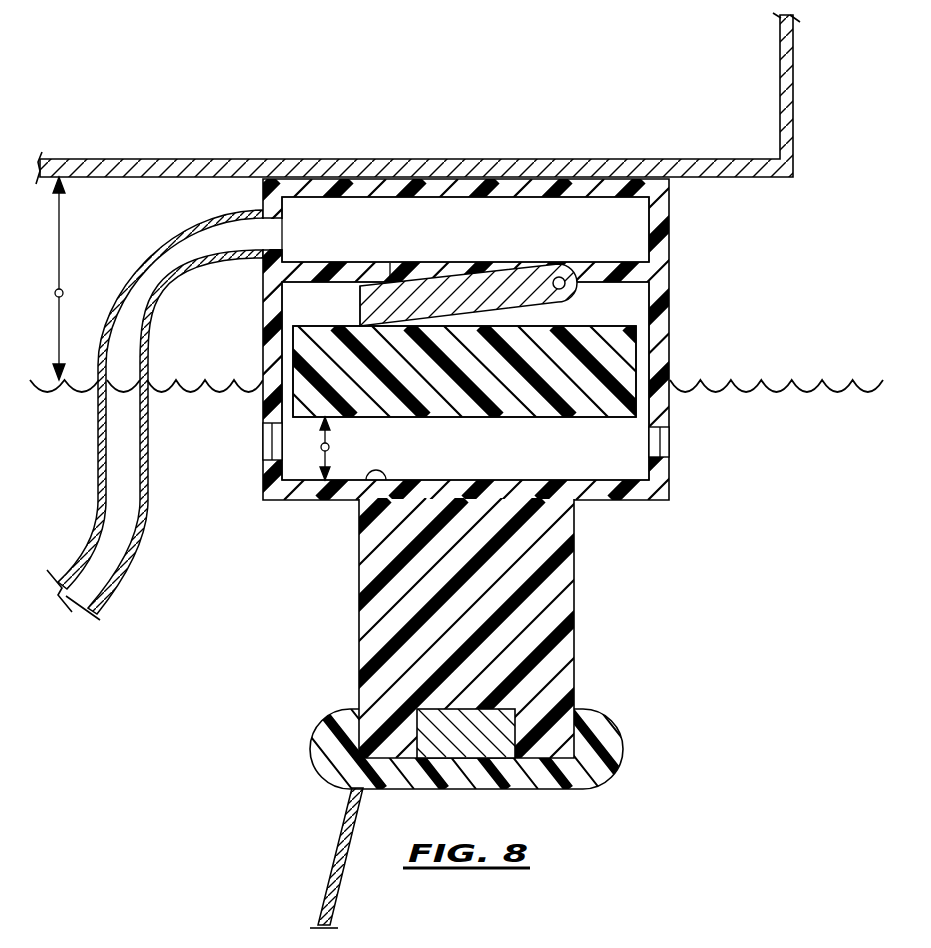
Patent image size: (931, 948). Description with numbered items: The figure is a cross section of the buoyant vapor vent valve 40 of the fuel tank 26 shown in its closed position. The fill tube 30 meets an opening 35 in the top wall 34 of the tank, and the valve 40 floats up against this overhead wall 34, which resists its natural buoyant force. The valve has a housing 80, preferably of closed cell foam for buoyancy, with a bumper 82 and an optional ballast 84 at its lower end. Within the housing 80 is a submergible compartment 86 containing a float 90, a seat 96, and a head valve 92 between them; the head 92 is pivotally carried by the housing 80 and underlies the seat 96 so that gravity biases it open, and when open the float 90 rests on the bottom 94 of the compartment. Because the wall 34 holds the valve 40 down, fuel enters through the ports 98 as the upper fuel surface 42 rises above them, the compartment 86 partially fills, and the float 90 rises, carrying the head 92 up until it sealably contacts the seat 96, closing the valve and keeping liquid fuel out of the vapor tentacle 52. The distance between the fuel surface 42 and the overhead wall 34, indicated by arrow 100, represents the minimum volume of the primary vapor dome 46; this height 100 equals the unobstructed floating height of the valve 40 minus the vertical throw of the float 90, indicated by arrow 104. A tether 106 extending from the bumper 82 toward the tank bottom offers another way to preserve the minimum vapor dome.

The fuel tank 26 is at (93, 153).
The fill tube 30 is at (778, 98).
The top wall 34 is at (462, 158).
The opening 35 is at (848, 164).
The buoyant vapor vent valve 40 is at (704, 238).
The upper fuel surface 42 is at (775, 390).
The primary vapor dome 46 is at (800, 304).
The tentacle 52 is at (187, 232).
The housing 80 is at (669, 208).
The bumper 82 is at (617, 714).
The ballast 84 is at (483, 720).
The submergible compartment 86 is at (605, 306).
The float 90 is at (587, 387).
The head valve 92 is at (450, 287).
The bottom 94 is at (362, 490).
The seat 96 is at (355, 290).
The ports 98 is at (272, 440).
The height 100 is at (62, 290).
The vertical throw of float 104 is at (330, 447).
The tether 106 is at (333, 860).